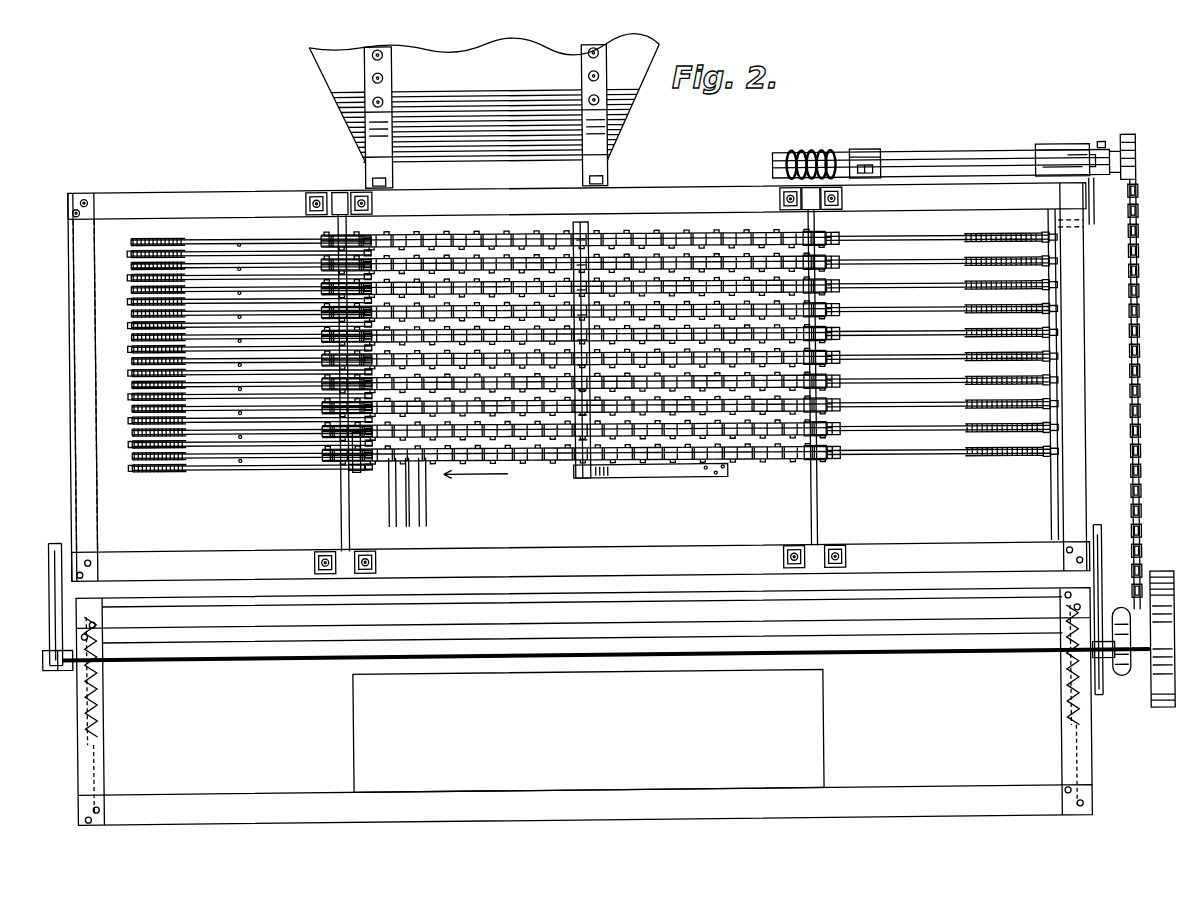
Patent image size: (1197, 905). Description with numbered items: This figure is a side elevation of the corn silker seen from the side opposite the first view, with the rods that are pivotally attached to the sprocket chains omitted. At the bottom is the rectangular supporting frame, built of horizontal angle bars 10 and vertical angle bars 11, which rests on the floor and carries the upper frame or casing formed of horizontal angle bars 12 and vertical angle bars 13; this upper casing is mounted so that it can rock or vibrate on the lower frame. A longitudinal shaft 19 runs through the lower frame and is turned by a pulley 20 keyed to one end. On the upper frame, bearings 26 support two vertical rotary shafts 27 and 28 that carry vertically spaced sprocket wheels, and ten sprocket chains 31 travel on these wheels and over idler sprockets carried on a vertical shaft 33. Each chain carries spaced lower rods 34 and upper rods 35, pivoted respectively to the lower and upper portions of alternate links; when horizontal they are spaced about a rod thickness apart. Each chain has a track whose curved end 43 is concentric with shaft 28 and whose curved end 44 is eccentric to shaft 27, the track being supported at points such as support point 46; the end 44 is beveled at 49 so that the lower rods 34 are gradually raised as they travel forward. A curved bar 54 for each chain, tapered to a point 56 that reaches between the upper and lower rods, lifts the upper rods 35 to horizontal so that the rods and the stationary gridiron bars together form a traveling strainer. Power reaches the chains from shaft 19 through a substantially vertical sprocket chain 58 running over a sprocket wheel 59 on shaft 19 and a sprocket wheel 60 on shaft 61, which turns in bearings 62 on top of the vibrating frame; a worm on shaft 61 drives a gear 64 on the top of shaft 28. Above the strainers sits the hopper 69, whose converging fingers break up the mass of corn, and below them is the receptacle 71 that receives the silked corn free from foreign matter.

The horizontal angle bars 10 is at (584, 707).
The vertical angle bars 11 is at (576, 674).
The horizontal angle bars 12 is at (579, 382).
The vertical angle bars 13 is at (132, 388).
The shaft 19 is at (958, 650).
The pulley 20 is at (1160, 700).
The bearings 26 is at (342, 196).
The vertical rotary shaft 27 is at (340, 489).
The vertical rotary shaft 28 is at (822, 504).
The sprocket chains 31 is at (586, 480).
The vertical shaft 33 is at (592, 362).
The lower rods 34 is at (388, 518).
The upper rods 35 is at (408, 494).
The curved end 43 is at (946, 238).
The curved end 44 is at (280, 275).
The support point 46 is at (1050, 470).
The bevel 49 is at (356, 470).
The curved bar 54 is at (204, 238).
The tapered point 56 is at (326, 246).
The sprocket chain 58 is at (1150, 418).
The sprocket wheel 59 is at (1120, 678).
The sprocket wheel 60 is at (1131, 141).
The shaft 61 is at (946, 160).
The bearings 62 is at (872, 158).
The gear 64 is at (826, 156).
The hopper 69 is at (485, 110).
The receptacle 71 is at (820, 700).